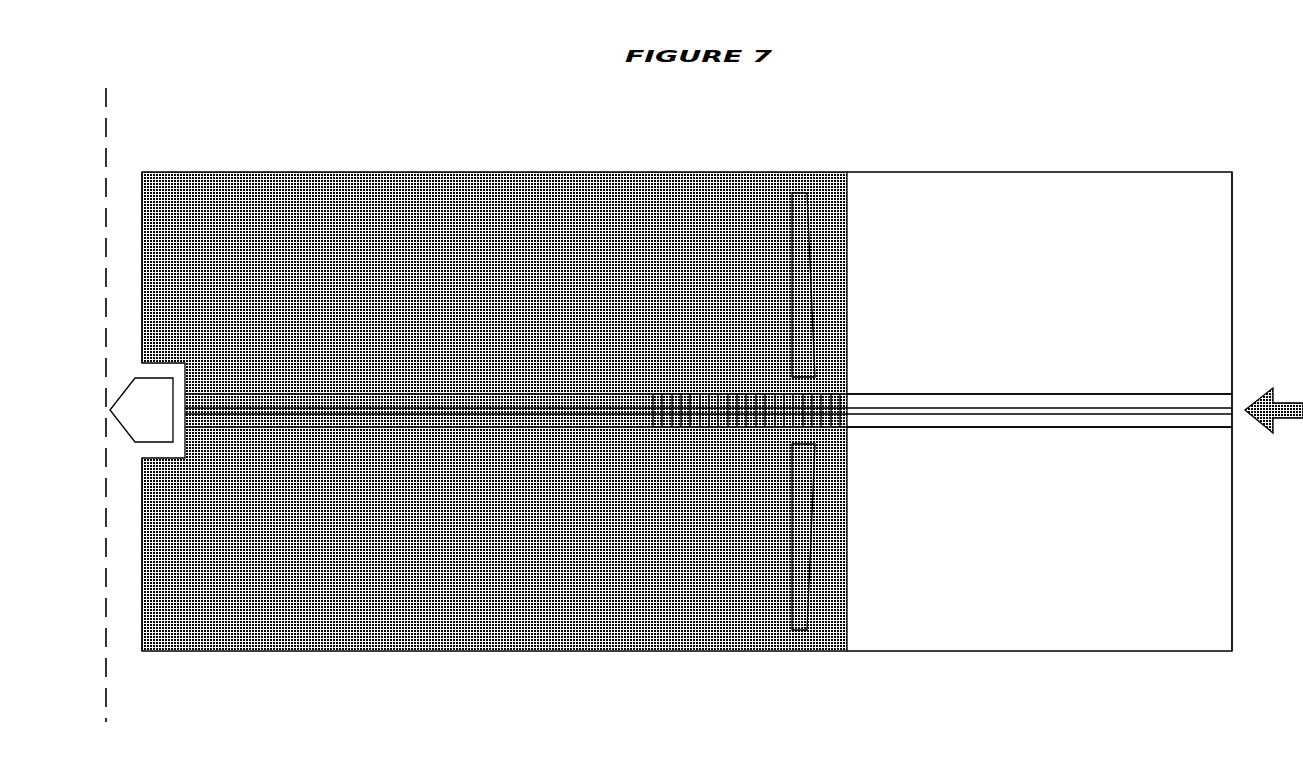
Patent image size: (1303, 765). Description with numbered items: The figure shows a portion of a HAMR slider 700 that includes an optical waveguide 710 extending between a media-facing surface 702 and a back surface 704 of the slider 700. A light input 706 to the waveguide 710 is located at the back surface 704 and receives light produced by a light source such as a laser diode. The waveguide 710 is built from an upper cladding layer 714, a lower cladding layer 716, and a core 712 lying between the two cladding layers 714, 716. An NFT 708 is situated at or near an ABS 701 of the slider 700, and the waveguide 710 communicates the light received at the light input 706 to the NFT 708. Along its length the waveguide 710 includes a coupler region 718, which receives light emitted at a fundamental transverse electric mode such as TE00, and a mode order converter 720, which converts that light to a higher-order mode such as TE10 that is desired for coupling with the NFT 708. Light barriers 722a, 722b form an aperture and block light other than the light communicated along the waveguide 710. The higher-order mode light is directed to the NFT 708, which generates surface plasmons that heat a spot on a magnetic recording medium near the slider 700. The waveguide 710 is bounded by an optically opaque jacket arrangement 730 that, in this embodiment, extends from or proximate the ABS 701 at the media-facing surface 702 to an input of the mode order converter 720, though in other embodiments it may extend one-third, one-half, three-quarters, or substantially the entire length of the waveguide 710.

The HAMR slider 700 is at (972, 122).
The ABS 701 is at (106, 250).
The media-facing surface 702 is at (141, 197).
The back surface 704 is at (1233, 303).
The light input 706 is at (1236, 410).
The NFT 708 is at (128, 437).
The optical waveguide 710 is at (1085, 391).
The core 712 is at (985, 409).
The upper cladding layer 714 is at (892, 405).
The lower cladding layer 716 is at (892, 417).
The coupler region 718 is at (1060, 516).
The mode order converter 720 is at (740, 394).
The light barrier 722a is at (792, 232).
The light barrier 722b is at (792, 572).
The optically opaque jacket arrangement 730 is at (472, 217).